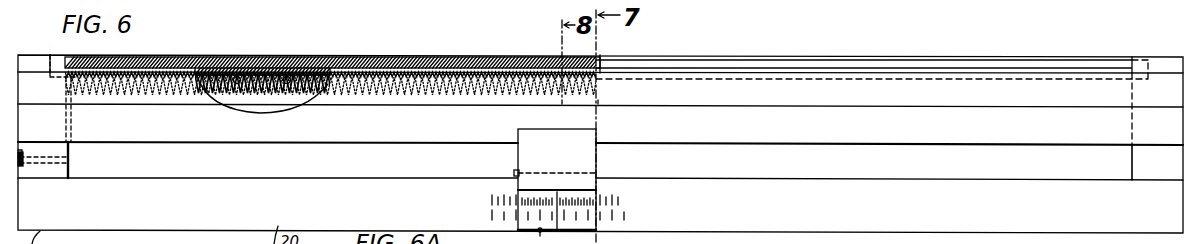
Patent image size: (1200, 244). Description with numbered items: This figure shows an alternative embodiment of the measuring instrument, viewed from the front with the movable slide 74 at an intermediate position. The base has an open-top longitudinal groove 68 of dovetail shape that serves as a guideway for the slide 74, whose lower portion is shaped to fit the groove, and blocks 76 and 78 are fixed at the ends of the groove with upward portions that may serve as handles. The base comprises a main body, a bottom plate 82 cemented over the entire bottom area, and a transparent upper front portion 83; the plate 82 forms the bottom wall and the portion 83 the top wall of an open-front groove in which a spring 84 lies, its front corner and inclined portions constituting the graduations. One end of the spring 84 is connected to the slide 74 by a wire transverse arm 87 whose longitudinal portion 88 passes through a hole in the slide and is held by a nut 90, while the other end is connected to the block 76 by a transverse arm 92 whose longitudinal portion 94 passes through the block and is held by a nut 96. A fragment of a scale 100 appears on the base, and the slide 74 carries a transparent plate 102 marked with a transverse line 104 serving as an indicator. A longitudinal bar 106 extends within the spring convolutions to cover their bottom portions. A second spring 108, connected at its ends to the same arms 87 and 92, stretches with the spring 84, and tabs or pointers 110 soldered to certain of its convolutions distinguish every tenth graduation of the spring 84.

The open-top longitudinal groove 68 is at (848, 148).
The slide 74 is at (583, 158).
The block 76 is at (60, 178).
The block 78 is at (1146, 176).
The bottom plate 82 is at (829, 58).
The upper front portion 83 is at (681, 87).
The spring 84 is at (441, 69).
The transverse arm 87 is at (599, 100).
The longitudinal portion 88 is at (538, 173).
The nut 90 is at (515, 170).
The transverse arm 92 is at (72, 125).
The longitudinal portion 94 is at (45, 157).
The nut 96 is at (22, 166).
The scale 100 is at (513, 198).
The transparent plate 102 is at (598, 226).
The transverse line 104 is at (538, 236).
The longitudinal bar 106 is at (1070, 66).
The second spring 108 is at (240, 82).
The tabs or pointers 110 is at (241, 78).